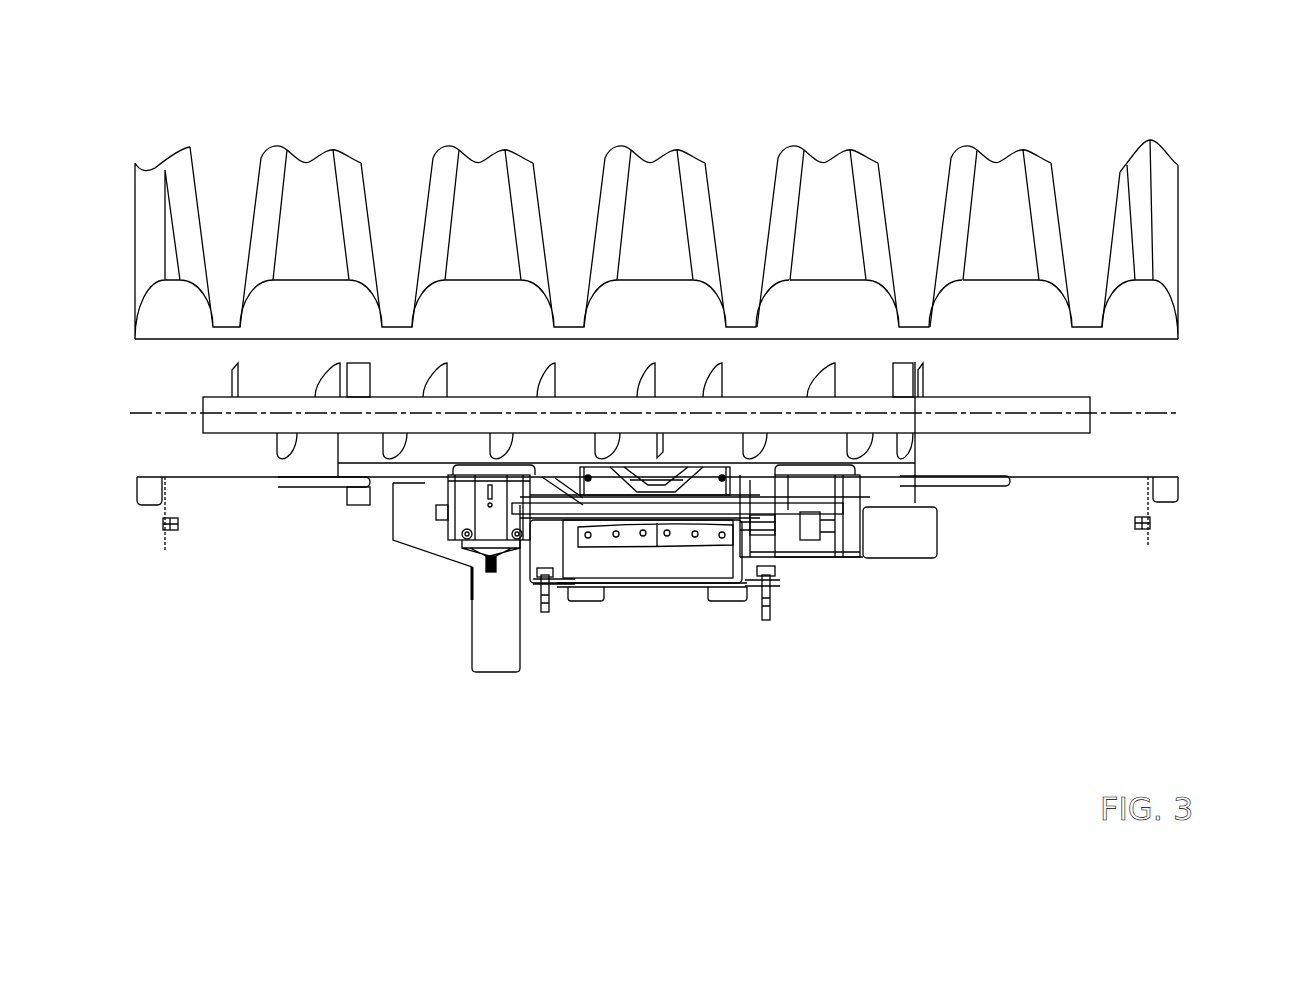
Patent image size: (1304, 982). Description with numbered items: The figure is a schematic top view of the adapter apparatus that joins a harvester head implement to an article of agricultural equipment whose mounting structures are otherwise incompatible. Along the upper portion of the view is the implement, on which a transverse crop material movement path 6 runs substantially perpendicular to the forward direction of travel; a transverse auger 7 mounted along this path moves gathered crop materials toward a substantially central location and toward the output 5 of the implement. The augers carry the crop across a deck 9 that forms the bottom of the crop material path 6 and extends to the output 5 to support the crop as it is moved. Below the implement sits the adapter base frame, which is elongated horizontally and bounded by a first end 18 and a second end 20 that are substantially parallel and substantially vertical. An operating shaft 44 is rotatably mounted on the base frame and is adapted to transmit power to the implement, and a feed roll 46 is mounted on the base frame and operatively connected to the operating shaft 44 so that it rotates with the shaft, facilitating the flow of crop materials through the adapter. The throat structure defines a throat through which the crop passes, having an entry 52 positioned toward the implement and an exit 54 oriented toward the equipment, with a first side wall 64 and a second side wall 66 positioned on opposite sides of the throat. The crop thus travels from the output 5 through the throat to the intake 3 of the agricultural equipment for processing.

The intake 3 is at (643, 413).
The output 5 is at (741, 466).
The transverse crop material movement path 6 is at (155, 413).
The transverse auger 7 is at (292, 446).
The deck 9 is at (167, 452).
The first end 18 is at (864, 512).
The second end 20 is at (448, 495).
The operating shaft 44 is at (490, 573).
The feed roll 46 is at (663, 513).
The entry 52 is at (663, 473).
The exit 54 is at (642, 583).
The first side wall 64 is at (750, 590).
The second side wall 66 is at (573, 477).